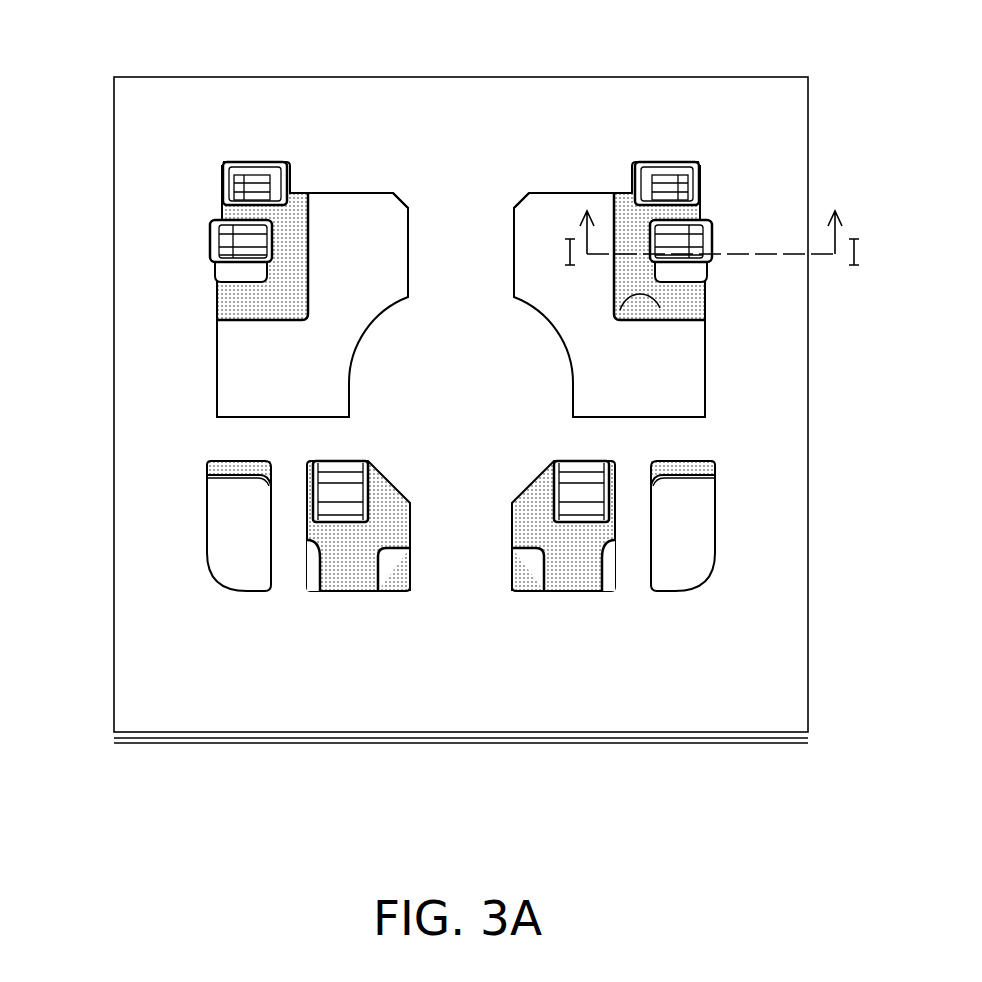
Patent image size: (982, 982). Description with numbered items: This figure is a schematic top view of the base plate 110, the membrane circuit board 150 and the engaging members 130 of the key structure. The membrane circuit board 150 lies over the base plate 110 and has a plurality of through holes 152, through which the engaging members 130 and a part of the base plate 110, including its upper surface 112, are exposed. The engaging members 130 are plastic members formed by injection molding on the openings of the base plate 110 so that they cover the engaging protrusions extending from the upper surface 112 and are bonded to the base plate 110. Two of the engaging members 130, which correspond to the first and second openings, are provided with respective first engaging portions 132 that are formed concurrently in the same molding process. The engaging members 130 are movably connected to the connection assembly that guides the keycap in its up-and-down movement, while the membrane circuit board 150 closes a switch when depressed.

The base plate 110 is at (693, 300).
The upper surface 112 is at (661, 299).
The engaging members 130 is at (232, 240).
The first engaging portions 132 is at (258, 201).
The membrane circuit board 150 is at (783, 120).
The through holes 152 is at (392, 257).